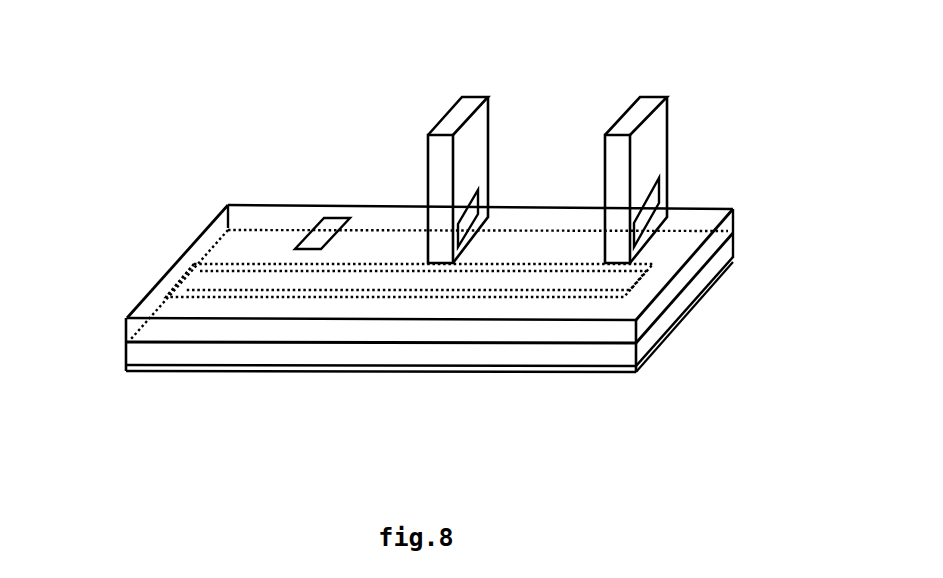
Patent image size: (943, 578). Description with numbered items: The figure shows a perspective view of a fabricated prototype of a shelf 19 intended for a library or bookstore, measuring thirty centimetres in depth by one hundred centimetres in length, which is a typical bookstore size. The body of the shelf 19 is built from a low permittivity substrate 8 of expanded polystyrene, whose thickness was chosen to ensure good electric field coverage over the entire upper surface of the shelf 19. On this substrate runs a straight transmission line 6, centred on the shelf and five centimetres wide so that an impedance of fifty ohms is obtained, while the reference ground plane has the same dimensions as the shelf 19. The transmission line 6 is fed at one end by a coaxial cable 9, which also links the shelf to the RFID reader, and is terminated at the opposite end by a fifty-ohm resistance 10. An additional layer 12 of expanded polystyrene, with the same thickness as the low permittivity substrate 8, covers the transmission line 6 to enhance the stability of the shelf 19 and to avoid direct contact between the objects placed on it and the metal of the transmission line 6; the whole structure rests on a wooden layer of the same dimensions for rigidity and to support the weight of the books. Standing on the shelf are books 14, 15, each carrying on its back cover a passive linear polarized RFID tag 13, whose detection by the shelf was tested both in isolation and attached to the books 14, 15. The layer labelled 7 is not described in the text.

The transmission line 6 is at (202, 278).
The bottom layer 7 is at (202, 367).
The low permittivity substrate 8 is at (453, 353).
The coaxial cable 9 is at (177, 278).
The resistance 10 is at (642, 280).
The additional layer 12 is at (572, 332).
The RFID tags 13 is at (327, 228).
The book 14 is at (462, 118).
The book 15 is at (643, 112).
The shelf 19 is at (637, 321).